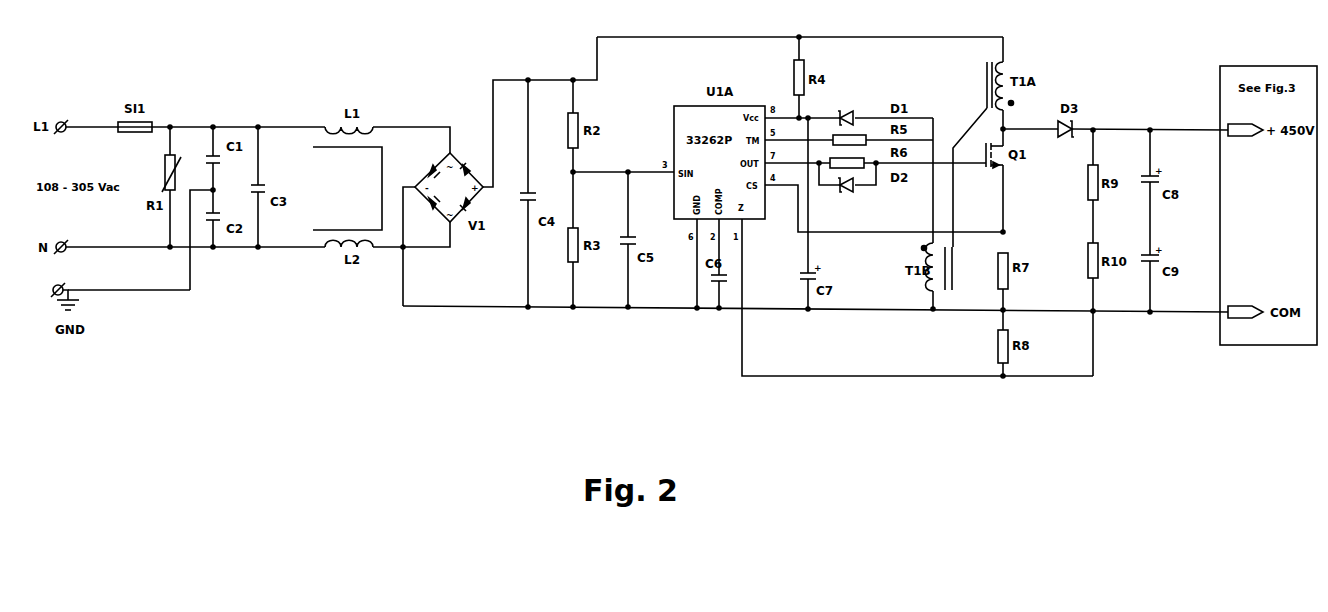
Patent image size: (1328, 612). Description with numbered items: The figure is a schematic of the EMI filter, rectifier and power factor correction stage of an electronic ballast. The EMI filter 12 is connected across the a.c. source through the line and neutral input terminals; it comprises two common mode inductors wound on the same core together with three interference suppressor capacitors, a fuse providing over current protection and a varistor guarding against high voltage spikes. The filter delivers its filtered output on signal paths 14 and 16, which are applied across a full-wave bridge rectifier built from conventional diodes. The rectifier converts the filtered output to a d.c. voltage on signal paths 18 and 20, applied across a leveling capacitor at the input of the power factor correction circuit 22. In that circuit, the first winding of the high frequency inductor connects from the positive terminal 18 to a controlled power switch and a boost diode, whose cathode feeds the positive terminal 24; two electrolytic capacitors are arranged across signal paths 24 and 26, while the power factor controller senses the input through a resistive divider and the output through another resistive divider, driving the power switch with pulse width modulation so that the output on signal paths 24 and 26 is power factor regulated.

The electromagnetic interference (EMI) filter 12 is at (238, 116).
The signal path 14 is at (411, 130).
The signal path 16 is at (411, 245).
The signal path (positive terminal) 18 is at (540, 112).
The signal path 20 is at (748, 317).
The power factor correction circuit 22 is at (800, 28).
The signal path (positive terminal) 24 is at (1150, 119).
The signal path 26 is at (1160, 327).